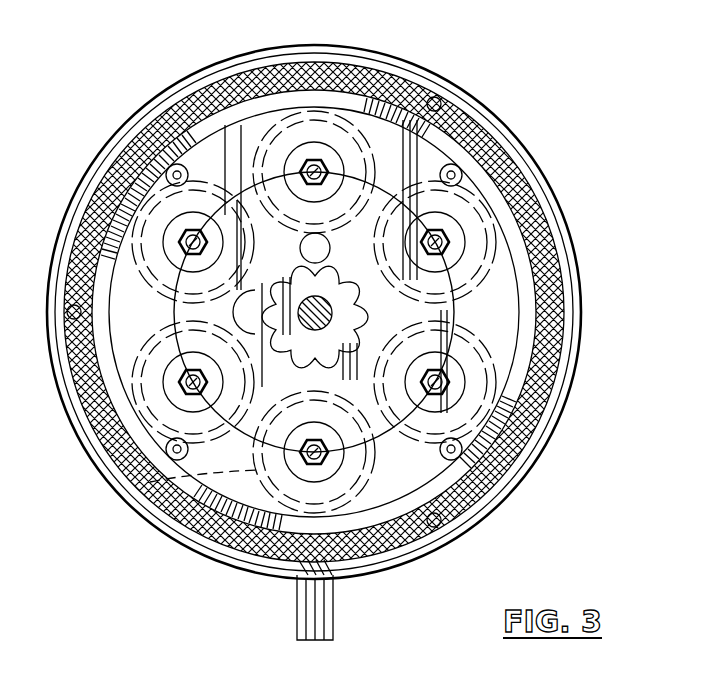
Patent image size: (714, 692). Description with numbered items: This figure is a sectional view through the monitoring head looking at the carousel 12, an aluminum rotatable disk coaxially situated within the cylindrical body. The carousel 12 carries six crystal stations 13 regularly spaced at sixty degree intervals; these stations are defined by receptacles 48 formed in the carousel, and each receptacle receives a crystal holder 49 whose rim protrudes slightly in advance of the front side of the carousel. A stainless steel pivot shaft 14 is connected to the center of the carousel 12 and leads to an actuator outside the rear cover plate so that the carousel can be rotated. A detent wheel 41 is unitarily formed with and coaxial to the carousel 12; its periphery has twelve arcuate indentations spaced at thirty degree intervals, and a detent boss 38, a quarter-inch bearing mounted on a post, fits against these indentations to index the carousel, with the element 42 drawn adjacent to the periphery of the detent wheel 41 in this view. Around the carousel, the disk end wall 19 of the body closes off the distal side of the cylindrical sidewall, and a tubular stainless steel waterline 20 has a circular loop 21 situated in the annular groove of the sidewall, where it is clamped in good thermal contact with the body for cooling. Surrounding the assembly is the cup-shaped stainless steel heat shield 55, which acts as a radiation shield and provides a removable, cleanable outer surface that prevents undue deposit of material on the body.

The carousel 12 is at (496, 344).
The crystal stations 13 is at (140, 230).
The pivot shaft 14 is at (333, 309).
The disk end wall 19 is at (583, 336).
The waterline 20 is at (334, 598).
The circular loop 21 is at (582, 259).
The detent boss 38 is at (312, 250).
The detent wheel 41 is at (315, 362).
The roller 42 is at (258, 310).
The receptacles 48 is at (210, 513).
The crystal holder 49 is at (96, 463).
The heat shield 55 is at (574, 379).